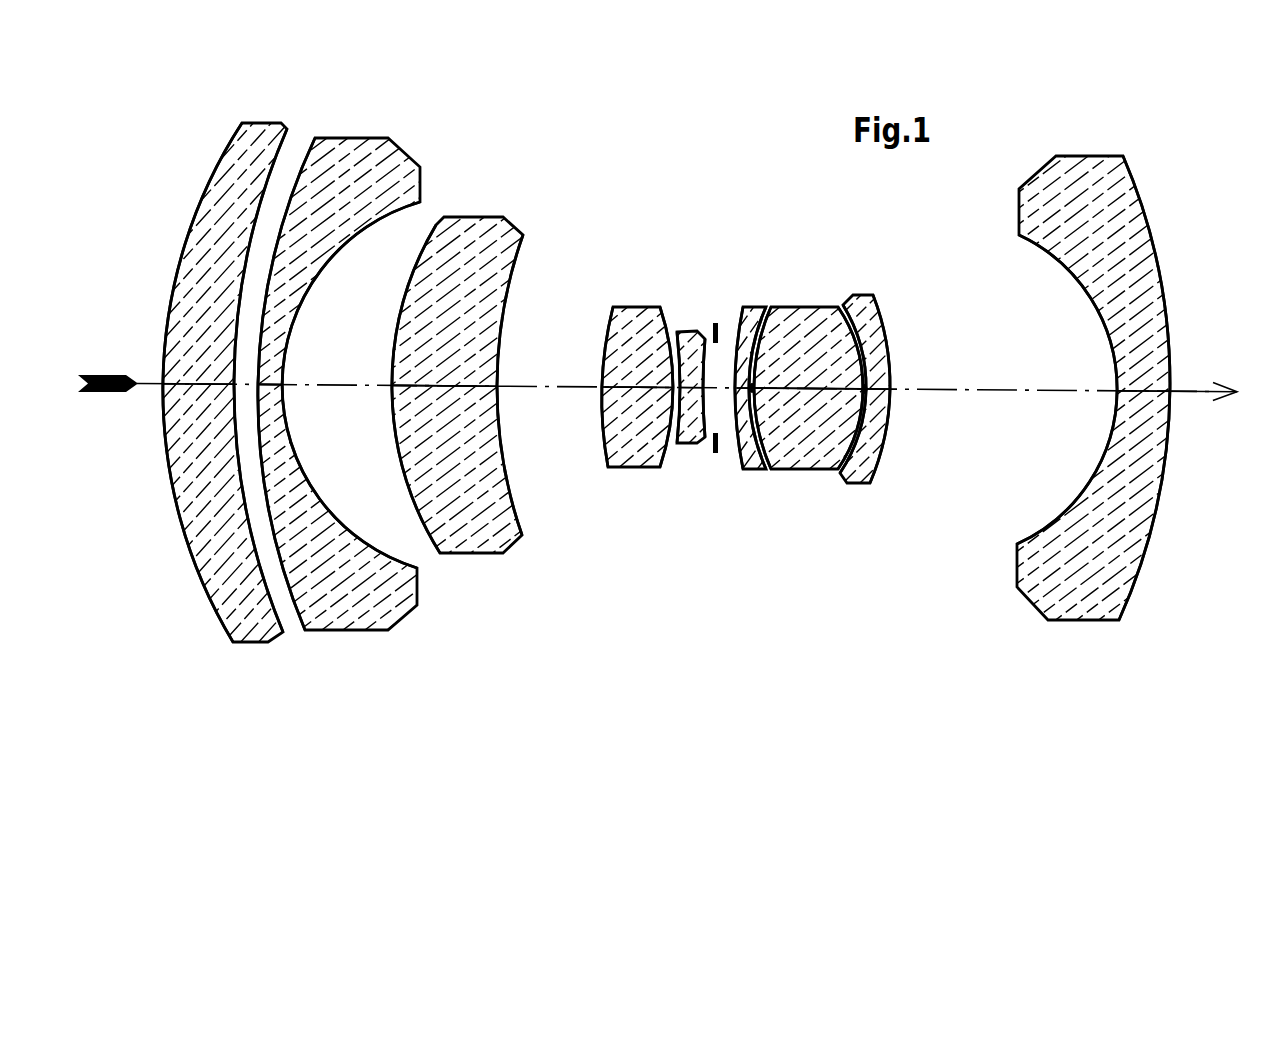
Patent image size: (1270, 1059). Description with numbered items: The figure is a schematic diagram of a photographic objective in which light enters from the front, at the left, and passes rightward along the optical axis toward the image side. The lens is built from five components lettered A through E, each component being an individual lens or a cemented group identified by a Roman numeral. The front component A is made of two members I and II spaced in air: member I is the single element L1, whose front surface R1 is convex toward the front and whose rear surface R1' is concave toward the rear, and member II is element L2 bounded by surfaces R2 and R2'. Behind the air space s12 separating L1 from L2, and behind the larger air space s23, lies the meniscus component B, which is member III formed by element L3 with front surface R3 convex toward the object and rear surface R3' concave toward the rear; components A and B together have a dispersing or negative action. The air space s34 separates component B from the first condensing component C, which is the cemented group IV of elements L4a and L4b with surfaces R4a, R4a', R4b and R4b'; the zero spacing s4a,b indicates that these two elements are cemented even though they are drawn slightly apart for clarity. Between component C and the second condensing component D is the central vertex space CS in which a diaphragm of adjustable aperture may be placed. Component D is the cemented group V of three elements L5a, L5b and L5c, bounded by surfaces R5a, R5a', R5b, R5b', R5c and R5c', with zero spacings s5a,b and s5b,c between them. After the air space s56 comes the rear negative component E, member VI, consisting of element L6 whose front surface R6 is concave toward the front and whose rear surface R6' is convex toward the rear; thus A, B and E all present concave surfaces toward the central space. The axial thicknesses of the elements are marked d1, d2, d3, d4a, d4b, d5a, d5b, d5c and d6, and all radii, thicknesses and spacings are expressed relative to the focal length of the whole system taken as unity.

The first lens element L1 is at (255, 632).
The second lens element L2 is at (358, 625).
The third lens element L3 is at (482, 537).
The front element of fourth lens group L4a is at (633, 459).
The rear element of fourth lens group L4b is at (684, 445).
The front element of fifth lens group L5a is at (750, 471).
The middle element of fifth lens group L5b is at (813, 470).
The rear element of fifth lens group L5c is at (863, 484).
The sixth lens element L6 is at (1080, 622).
The front surface radius of first element R1 is at (202, 361).
The rear surface radius of first element R1' is at (263, 354).
The front surface radius of second element R2 is at (300, 355).
The rear surface radius of second element R2' is at (351, 320).
The front surface radius of third element R3 is at (432, 351).
The rear surface radius of third element R3' is at (521, 351).
The front surface radius of element L4a R4a is at (591, 354).
The rear surface radius of element L4a R4a' is at (650, 352).
The front surface radius of element L4b R4b is at (667, 318).
The rear surface radius of element L4b R4b' is at (702, 338).
The front surface radius of element L5a R5a is at (751, 346).
The rear surface radius of element L5a R5a' is at (772, 354).
The front surface radius of element L5b R5b is at (787, 337).
The rear surface radius of element L5b R5b' is at (856, 337).
The front surface radius of element L5c R5c is at (884, 361).
The rear surface radius of element L5c R5c' is at (911, 389).
The front surface radius of sixth element R6 is at (1067, 389).
The rear surface radius of sixth element R6' is at (1163, 388).
The axial thickness of first element d1 is at (198, 384).
The axial thickness of second element d2 is at (270, 394).
The axial thickness of third element d3 is at (444, 389).
The axial thickness of element L4a d4a is at (637, 389).
The axial thickness of element L4b d4b is at (723, 364).
The axial thickness of element L5a d5a is at (721, 484).
The axial thickness of element L5b d5b is at (808, 387).
The axial thickness of element L5c d5c is at (890, 372).
The axial thickness of sixth element d6 is at (1143, 394).
The spacing between first and second elements s12 is at (246, 390).
The spacing between second and third elements s23 is at (337, 387).
The spacing between third and fourth elements s34 is at (563, 389).
The spacing between elements L4a and L4b s4a,b is at (668, 449).
The spacing between elements L5a and L5b s5a,b is at (764, 462).
The spacing between elements L5b and L5c s5b,c is at (866, 395).
The spacing between fifth and sixth elements s56 is at (986, 392).
The central vertex space CS is at (715, 456).
The first member I is at (257, 740).
The second member II is at (358, 690).
The third member III is at (492, 705).
The fourth lens group IV is at (712, 576).
The fifth lens group V is at (902, 594).
The sixth member VI is at (1084, 749).
The front meniscus component A is at (375, 747).
The second meniscus component B is at (480, 710).
The first condensing component C is at (660, 660).
The second condensing component D is at (814, 660).
The rear negative component E is at (1070, 756).